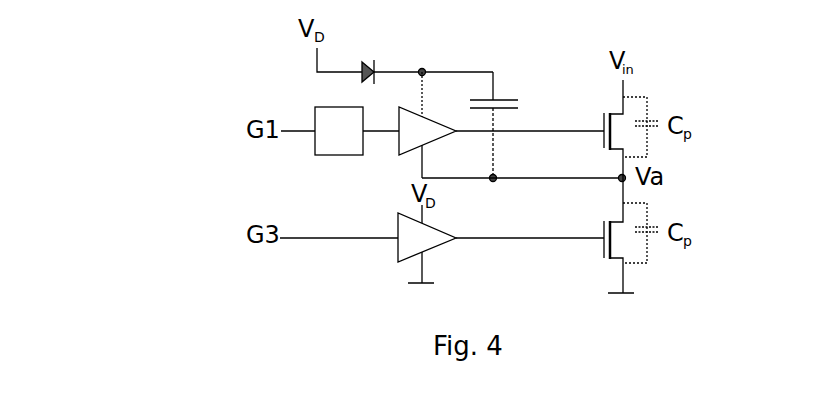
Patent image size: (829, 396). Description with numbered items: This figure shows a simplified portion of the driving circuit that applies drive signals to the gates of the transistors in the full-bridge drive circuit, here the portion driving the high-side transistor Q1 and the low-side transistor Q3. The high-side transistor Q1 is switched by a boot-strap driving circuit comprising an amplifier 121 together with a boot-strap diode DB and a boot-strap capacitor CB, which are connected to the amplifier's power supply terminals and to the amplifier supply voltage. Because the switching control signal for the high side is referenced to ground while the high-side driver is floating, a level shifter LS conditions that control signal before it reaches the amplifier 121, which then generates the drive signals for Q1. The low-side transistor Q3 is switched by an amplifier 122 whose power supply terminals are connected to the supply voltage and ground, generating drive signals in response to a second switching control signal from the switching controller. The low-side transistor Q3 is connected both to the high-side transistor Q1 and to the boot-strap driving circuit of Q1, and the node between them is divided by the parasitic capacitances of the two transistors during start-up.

The amplifier 121 is at (398, 152).
The amplifier 122 is at (398, 224).
The high-side transistor Q1 is at (594, 129).
The low-side transistor Q3 is at (598, 235).
The boot-strap diode DB is at (427, 57).
The boot-strap capacitor CB is at (500, 124).
The level shifter LS is at (339, 131).